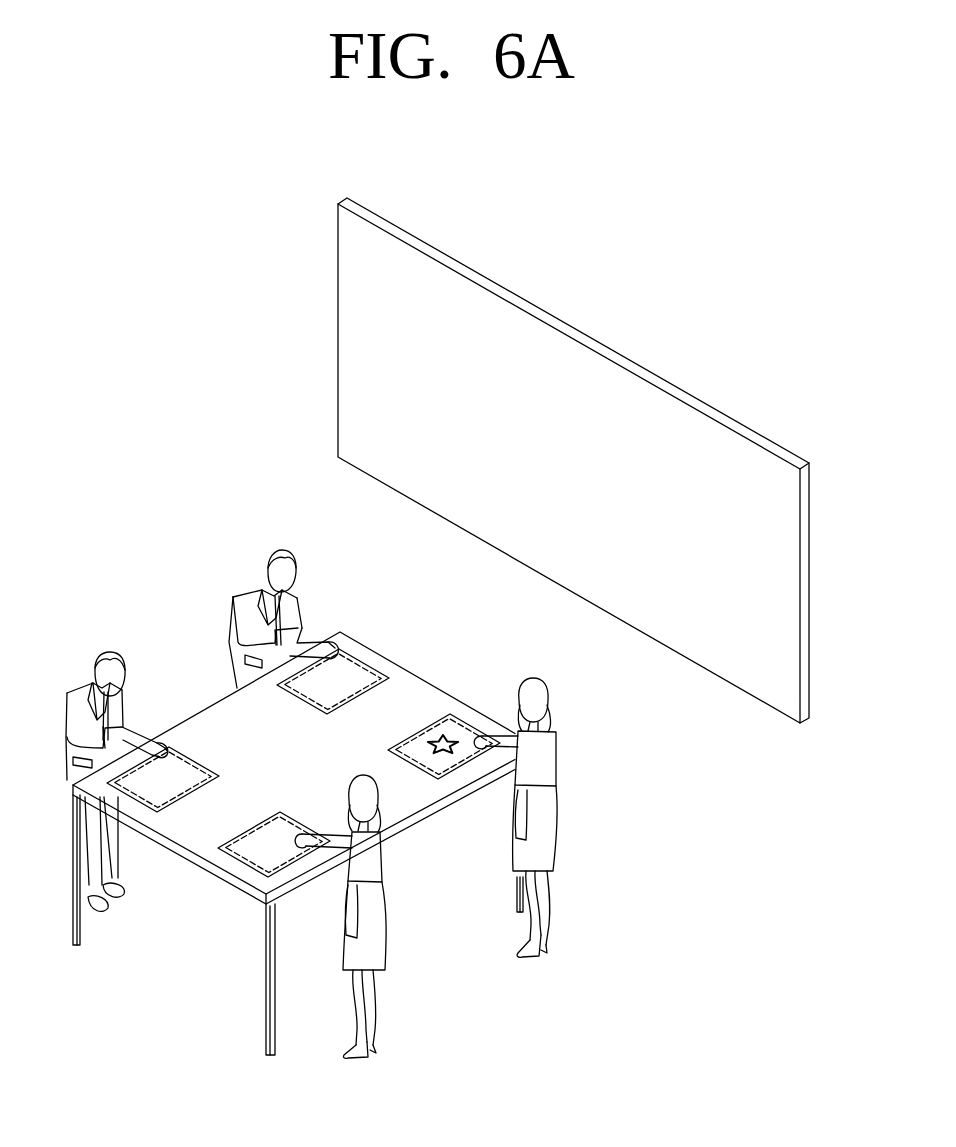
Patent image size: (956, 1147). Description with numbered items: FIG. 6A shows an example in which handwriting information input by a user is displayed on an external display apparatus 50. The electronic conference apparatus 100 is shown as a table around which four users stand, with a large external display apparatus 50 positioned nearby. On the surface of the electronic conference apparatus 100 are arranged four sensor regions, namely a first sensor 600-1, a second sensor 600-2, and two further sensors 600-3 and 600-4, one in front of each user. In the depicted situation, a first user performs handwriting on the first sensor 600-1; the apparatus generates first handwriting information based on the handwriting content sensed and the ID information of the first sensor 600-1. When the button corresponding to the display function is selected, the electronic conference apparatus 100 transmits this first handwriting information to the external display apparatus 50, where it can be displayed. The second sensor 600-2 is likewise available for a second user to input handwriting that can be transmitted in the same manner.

The external display apparatus 50 is at (777, 445).
The electronic conference apparatus 100 is at (433, 684).
The first sensor 600-1 is at (448, 776).
The second sensor 600-2 is at (393, 637).
The user terminal device 600-3 is at (171, 749).
The user terminal device 600-4 is at (242, 860).